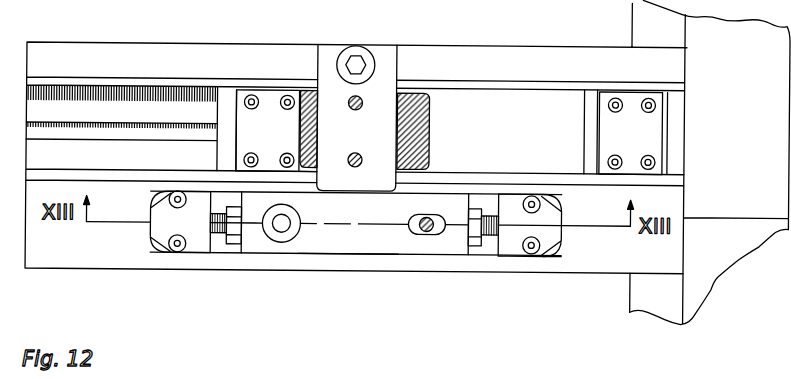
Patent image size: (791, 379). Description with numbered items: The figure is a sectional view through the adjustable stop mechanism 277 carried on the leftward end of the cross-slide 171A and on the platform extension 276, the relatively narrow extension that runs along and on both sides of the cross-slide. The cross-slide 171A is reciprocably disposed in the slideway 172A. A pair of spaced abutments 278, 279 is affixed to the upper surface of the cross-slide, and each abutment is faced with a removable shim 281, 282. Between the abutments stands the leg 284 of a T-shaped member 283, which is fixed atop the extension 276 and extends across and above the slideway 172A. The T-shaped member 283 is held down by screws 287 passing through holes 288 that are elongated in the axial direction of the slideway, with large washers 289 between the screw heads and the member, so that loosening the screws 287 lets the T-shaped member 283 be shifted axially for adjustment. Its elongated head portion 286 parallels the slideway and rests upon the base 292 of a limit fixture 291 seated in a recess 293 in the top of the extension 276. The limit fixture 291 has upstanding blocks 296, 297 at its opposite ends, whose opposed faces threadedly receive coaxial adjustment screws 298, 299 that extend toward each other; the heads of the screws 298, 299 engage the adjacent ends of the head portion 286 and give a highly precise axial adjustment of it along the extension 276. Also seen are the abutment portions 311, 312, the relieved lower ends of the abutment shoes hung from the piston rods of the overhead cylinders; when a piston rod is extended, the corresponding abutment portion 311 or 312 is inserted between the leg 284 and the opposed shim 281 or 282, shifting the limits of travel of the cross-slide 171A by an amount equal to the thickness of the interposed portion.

The cross-slide 171A is at (520, 104).
The slideway 172A is at (443, 82).
The platform extension 276 is at (80, 262).
The adjustable stop mechanism 277 is at (190, 287).
The abutment 278 is at (267, 112).
The abutment 279 is at (650, 66).
The shim 281 is at (305, 172).
The shim 282 is at (592, 153).
The T-shaped member 283 is at (310, 260).
The leg 284 is at (388, 57).
The head portion 286 is at (343, 251).
The screws 287 is at (278, 220).
The holes 288 is at (441, 229).
The washers 289 is at (300, 230).
The limit fixture 291 is at (498, 261).
The base 292 is at (229, 247).
The recess 293 is at (563, 246).
The upstanding block 296 is at (160, 213).
The upstanding block 297 is at (552, 219).
The adjustment screw 298 is at (222, 212).
The adjustment screw 299 is at (478, 208).
The abutment portion 311 is at (305, 88).
The abutment portion 312 is at (417, 136).